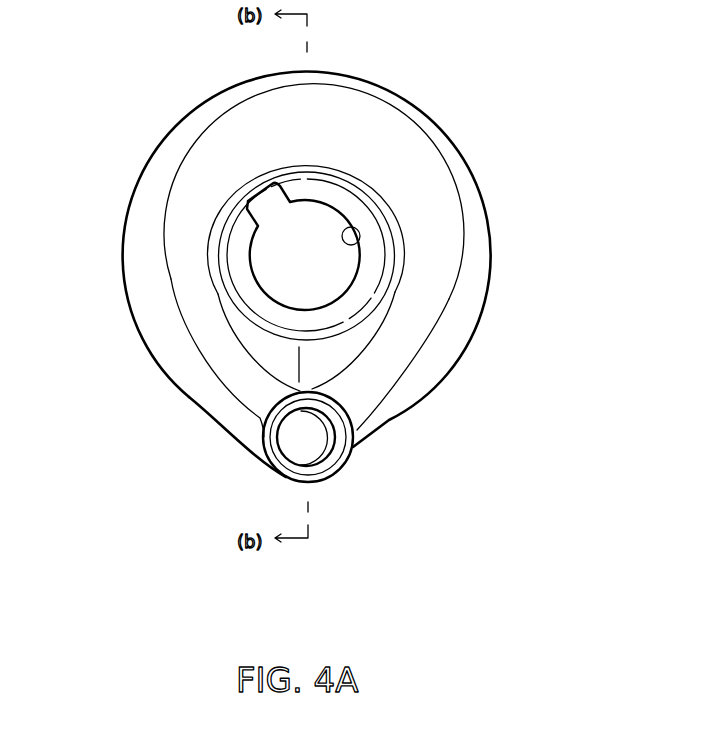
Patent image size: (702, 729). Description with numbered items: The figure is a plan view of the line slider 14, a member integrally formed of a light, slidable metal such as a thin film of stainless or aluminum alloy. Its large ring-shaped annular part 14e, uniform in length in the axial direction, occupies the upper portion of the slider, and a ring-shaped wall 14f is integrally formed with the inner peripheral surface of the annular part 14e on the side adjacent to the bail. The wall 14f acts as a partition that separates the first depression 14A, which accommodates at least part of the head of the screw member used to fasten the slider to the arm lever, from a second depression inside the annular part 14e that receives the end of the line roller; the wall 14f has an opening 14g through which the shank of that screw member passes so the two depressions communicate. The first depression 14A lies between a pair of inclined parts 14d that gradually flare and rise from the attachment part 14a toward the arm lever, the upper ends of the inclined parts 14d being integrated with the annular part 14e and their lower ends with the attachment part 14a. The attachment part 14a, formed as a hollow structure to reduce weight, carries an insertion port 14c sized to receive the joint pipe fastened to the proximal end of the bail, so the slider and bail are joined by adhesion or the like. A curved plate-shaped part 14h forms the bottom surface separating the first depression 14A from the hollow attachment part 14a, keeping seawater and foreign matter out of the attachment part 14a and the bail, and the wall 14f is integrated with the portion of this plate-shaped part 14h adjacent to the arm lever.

The line slider 14 is at (308, 258).
The annular part 14e is at (192, 110).
The inclined parts 14d is at (450, 230).
The first depression 14A is at (233, 310).
The wall 14f is at (337, 200).
The opening 14g is at (360, 245).
The plate-shaped part 14h is at (318, 358).
The attachment part 14a is at (262, 433).
The insertion port 14c is at (340, 463).